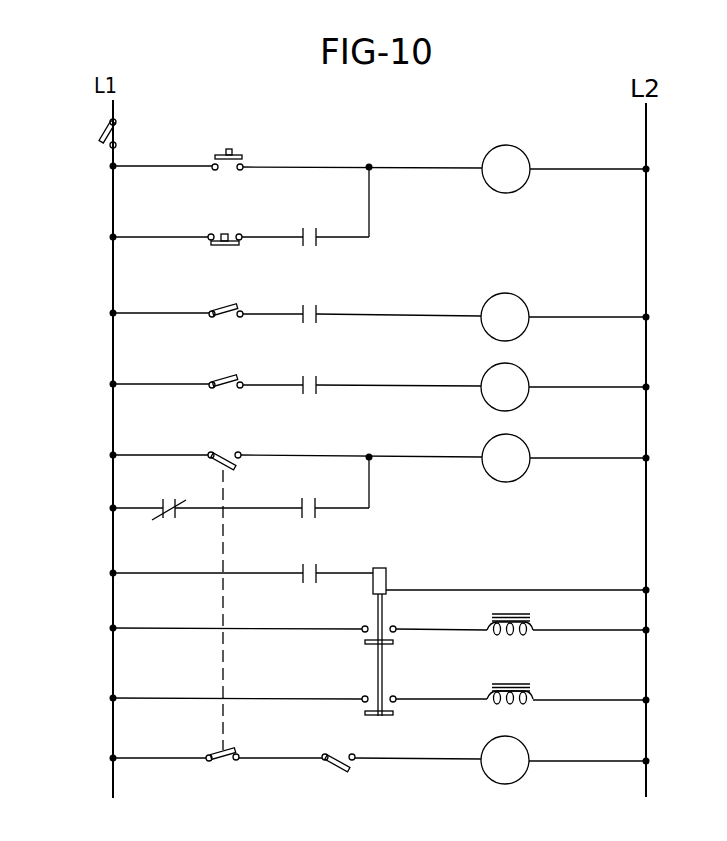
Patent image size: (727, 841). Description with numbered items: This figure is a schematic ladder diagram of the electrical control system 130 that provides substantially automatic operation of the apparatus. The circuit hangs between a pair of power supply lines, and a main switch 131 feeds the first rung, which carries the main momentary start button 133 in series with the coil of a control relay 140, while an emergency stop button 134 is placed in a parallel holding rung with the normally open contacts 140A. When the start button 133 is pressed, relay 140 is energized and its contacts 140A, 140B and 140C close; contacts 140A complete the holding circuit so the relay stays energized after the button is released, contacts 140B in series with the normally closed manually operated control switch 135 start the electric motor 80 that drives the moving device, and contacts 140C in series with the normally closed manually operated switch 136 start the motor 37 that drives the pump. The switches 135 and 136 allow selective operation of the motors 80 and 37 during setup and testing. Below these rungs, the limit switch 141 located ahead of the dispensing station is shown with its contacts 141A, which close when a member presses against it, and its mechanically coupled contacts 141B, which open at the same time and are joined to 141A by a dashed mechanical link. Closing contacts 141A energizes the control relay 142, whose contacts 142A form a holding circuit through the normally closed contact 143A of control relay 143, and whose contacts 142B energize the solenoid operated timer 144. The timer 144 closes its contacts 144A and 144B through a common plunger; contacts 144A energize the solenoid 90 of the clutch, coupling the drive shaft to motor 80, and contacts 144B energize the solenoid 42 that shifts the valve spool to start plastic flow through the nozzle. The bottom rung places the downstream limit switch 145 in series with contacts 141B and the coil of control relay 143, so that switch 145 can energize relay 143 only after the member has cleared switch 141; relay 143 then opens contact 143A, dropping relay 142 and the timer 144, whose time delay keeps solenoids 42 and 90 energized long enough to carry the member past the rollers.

The electrical control system 130 is at (535, 86).
The main switch 131 is at (99, 133).
The main momentary start button 133 is at (241, 154).
The emergency stop button 134 is at (231, 233).
The control relay 140 is at (519, 150).
The contacts of control relay 140 140A is at (323, 216).
The contacts of control relay 140 140B is at (323, 293).
The contacts of control relay 140 140C is at (323, 364).
The normally closed manually operated control switch 135 is at (231, 309).
The normally closed manually operated switch 136 is at (231, 380).
The electric motor 80 is at (524, 299).
The motor 37 is at (524, 371).
The limit switch 141 is at (203, 437).
The contacts of limit switch 141 141A is at (222, 454).
The contacts of limit switch 141 141B is at (210, 753).
The control relay 142 is at (525, 443).
The contacts of control relay 142 142A is at (298, 473).
The contacts of control relay 142 142B is at (303, 565).
The normally closed contact of control relay 143 143A is at (183, 474).
The solenoid operated timer 144 is at (388, 572).
The contacts of timer 144 144A is at (365, 645).
The contacts of timer 144 144B is at (370, 715).
The solenoid 90 is at (530, 625).
The solenoid 42 is at (534, 695).
The control relay 143 is at (524, 747).
The limit switch 145 is at (331, 773).